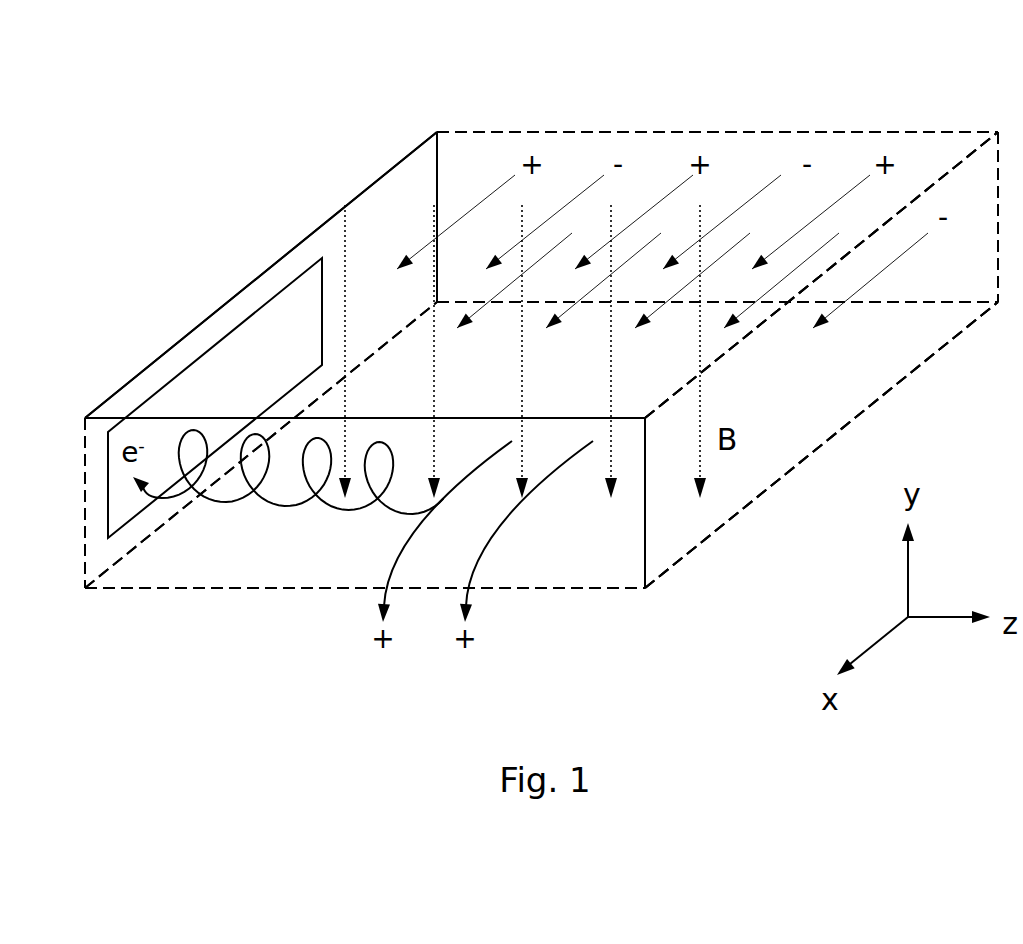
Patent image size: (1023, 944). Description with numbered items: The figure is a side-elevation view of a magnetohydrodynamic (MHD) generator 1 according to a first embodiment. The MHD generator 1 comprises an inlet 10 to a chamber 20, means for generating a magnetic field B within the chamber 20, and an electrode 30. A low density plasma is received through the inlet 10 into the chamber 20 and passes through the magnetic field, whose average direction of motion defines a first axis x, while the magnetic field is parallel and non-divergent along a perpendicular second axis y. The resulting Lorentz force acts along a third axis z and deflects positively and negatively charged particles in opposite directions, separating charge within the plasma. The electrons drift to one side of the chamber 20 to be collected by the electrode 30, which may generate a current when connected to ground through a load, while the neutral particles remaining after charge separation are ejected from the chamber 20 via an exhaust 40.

The magnetohydrodynamic (MHD) generator 1 is at (236, 106).
The inlet 10 is at (852, 150).
The chamber 20 is at (877, 348).
The electrode 30 is at (210, 348).
The exhaust 40 is at (582, 573).